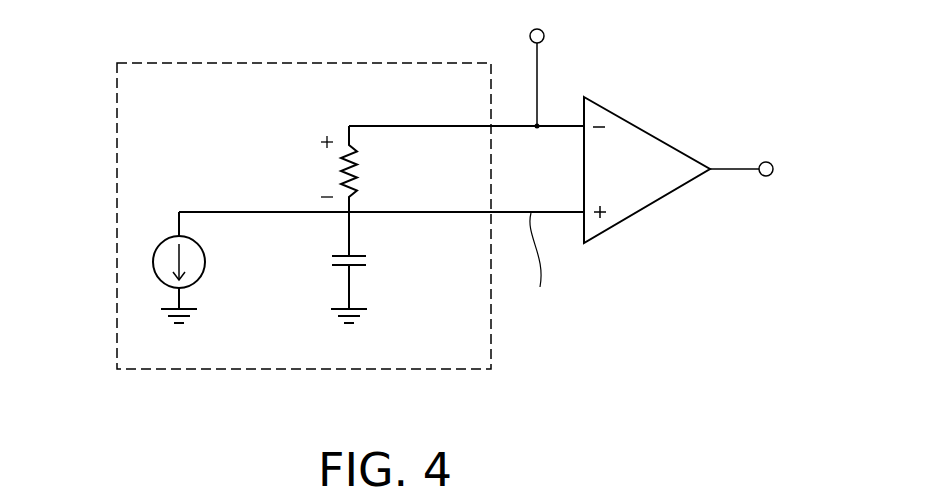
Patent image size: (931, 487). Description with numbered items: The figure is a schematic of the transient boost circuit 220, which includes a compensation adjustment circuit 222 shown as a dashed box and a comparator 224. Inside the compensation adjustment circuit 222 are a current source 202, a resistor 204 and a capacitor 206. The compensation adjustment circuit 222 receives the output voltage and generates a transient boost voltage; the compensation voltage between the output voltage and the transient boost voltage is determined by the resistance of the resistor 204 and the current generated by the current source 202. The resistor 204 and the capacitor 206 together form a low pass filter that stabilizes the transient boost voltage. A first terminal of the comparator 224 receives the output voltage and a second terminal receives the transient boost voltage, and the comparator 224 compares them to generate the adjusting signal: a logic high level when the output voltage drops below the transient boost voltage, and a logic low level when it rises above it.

The transient boost circuit 220 is at (86, 38).
The compensation adjustment circuit 222 is at (222, 63).
The current source 202 is at (205, 262).
The resistor 204 is at (360, 167).
The capacitor 206 is at (368, 258).
The comparator 224 is at (648, 131).